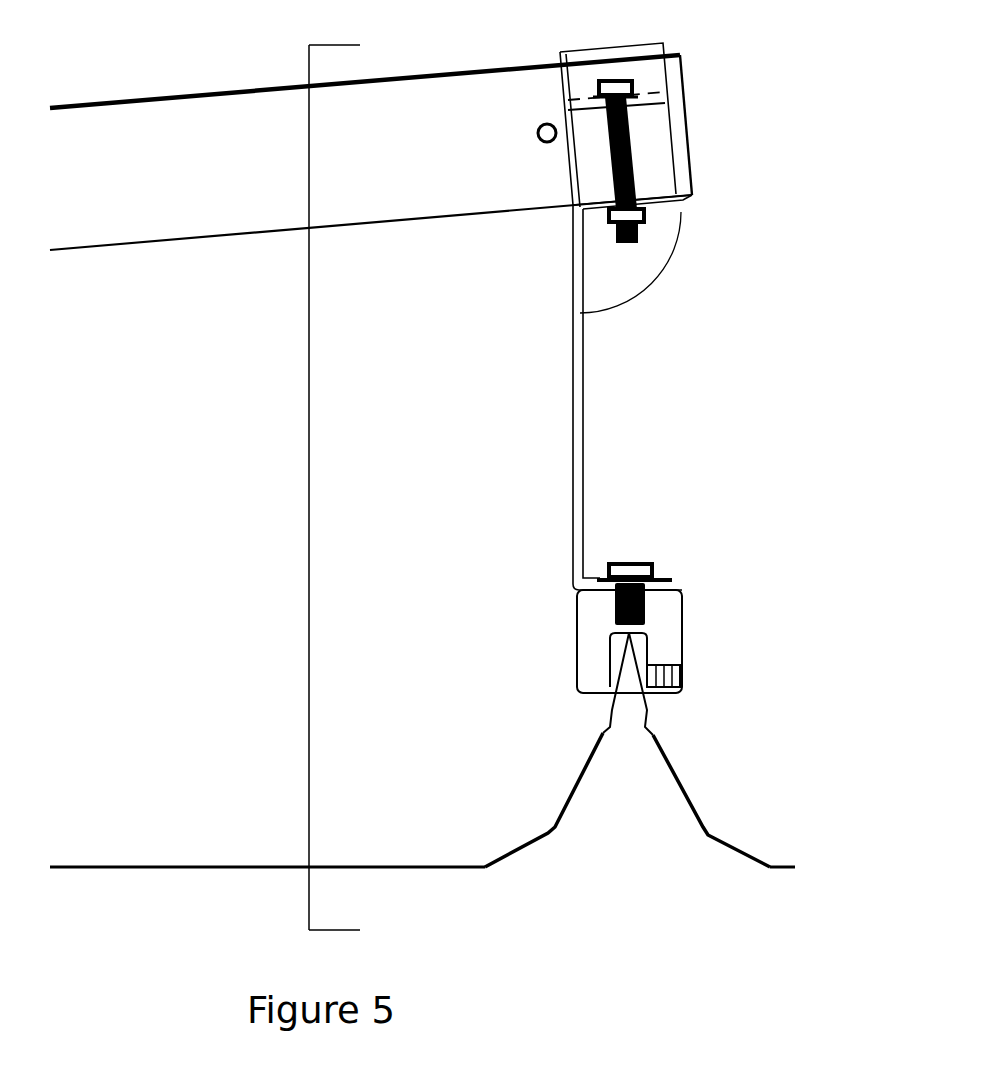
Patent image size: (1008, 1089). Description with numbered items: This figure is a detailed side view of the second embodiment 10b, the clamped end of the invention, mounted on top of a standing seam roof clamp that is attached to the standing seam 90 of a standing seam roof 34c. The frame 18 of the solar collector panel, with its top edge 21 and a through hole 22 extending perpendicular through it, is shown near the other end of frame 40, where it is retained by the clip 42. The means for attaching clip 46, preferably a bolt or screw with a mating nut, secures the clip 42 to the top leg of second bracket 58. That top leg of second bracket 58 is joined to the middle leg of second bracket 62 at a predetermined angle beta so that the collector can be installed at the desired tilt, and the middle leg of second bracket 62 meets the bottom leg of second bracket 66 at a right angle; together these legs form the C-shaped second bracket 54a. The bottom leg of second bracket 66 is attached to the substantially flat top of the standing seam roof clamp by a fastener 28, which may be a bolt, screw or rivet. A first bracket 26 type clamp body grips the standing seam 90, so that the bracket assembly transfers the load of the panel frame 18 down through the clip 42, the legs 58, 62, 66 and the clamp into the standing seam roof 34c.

The top edge of frame 21 is at (130, 93).
The frame for solar collector panel 18 is at (200, 204).
The through hole in frame 22 is at (538, 123).
The clip 42 is at (625, 55).
The other end of frame 40 is at (687, 118).
The means for attaching clip 46 is at (628, 138).
The top leg of second bracket 58 is at (657, 205).
The middle leg of second bracket 62 is at (575, 378).
The C-shaped second bracket 54a is at (538, 513).
The fastener 28 is at (617, 563).
The bottom leg of second bracket 66 is at (672, 577).
The first bracket 26 is at (590, 640).
The standing seam 90 is at (652, 780).
The standing seam roof 34c is at (228, 867).
The second embodiment 10b is at (309, 487).